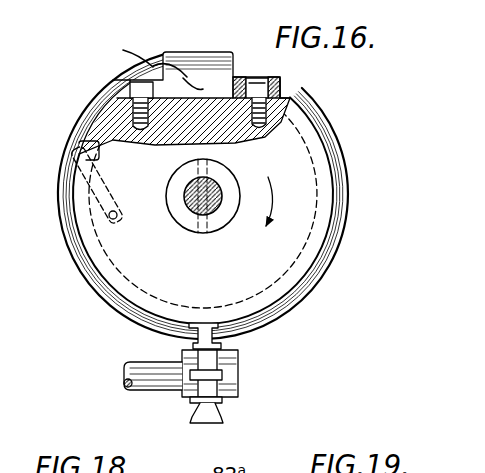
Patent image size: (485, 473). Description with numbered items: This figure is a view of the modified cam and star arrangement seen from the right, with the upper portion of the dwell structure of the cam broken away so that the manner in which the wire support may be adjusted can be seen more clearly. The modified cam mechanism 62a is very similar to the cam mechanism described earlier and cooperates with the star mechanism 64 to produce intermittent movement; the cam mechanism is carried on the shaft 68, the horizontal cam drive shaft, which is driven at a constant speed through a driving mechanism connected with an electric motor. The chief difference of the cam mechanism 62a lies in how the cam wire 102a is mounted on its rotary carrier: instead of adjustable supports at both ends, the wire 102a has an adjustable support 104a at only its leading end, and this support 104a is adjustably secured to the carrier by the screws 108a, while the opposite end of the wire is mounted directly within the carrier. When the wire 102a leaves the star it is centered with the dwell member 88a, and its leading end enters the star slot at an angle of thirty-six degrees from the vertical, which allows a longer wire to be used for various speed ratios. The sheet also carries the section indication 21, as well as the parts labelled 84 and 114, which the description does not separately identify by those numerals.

The section line 21 is at (52, 266).
The cam mechanism 62a is at (308, 306).
The star mechanism 64 is at (230, 410).
The shaft 68 is at (212, 206).
The rod 84 is at (125, 371).
The dwell member 88a is at (288, 147).
The cam wire 102a is at (118, 48).
The adjustable support 104a is at (222, 33).
The screws 108a is at (133, 117).
The bar 114 is at (110, 222).